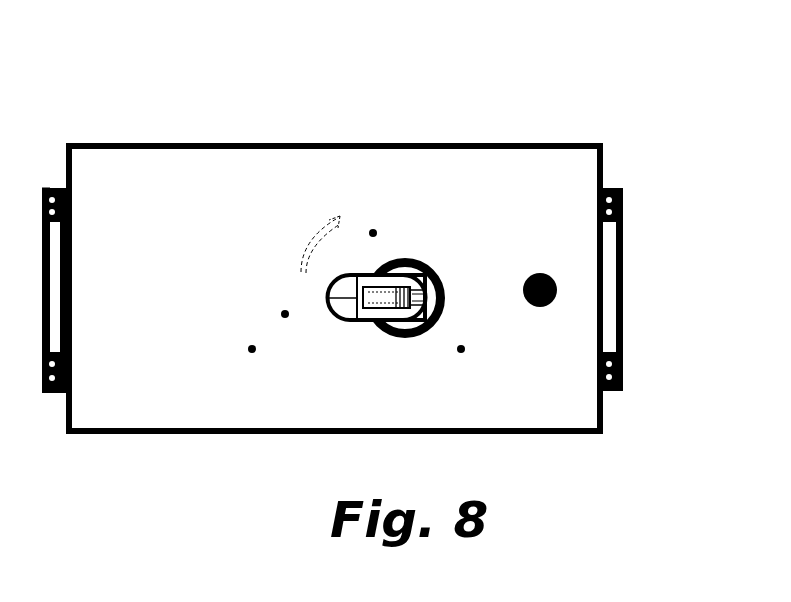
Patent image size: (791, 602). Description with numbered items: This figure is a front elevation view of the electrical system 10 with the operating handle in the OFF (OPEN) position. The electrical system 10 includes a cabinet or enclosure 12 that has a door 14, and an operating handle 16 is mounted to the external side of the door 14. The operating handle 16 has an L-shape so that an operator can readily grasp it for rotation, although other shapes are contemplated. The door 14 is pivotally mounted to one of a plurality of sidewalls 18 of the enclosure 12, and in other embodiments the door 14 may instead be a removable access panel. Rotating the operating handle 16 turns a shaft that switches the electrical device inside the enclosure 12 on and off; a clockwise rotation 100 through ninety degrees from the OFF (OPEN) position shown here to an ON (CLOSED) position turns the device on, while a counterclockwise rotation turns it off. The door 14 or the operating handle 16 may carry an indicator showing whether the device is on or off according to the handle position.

The electrical system 10 is at (440, 78).
The enclosure 12 is at (625, 150).
The door 14 is at (190, 287).
The operating handle 16 is at (364, 272).
The sidewalls 18 is at (50, 158).
The clockwise rotation 100 is at (306, 243).